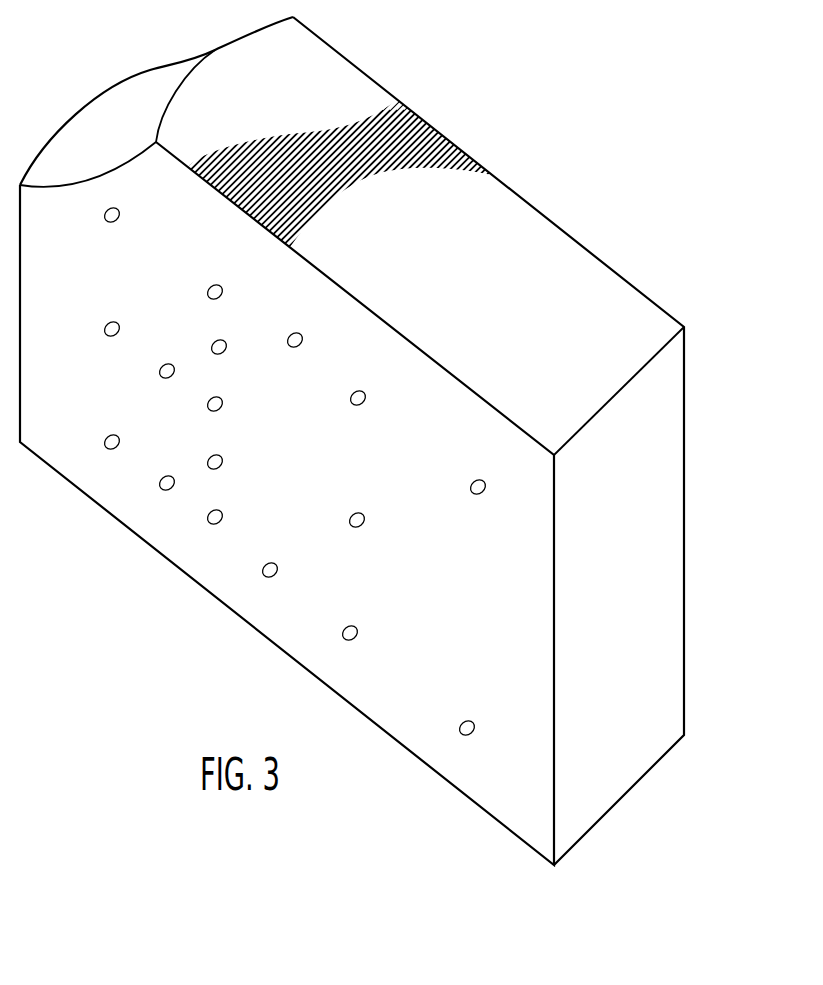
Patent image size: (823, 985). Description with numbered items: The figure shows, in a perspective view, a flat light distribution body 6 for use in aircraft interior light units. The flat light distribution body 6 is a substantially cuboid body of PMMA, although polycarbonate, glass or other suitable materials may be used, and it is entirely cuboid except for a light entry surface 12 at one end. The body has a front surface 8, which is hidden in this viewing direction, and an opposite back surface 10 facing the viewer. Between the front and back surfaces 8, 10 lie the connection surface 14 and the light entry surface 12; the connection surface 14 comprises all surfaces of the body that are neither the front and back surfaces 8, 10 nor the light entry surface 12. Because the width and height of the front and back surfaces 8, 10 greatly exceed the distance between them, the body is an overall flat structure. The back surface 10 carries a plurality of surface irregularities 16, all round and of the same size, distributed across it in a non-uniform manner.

The flat light distribution body 6 is at (600, 109).
The front surface 8 is at (710, 399).
The back surface 10 is at (343, 477).
The light entry surface 12 is at (97, 147).
The connection surface 14 is at (416, 254).
The surface irregularities 16 is at (356, 628).